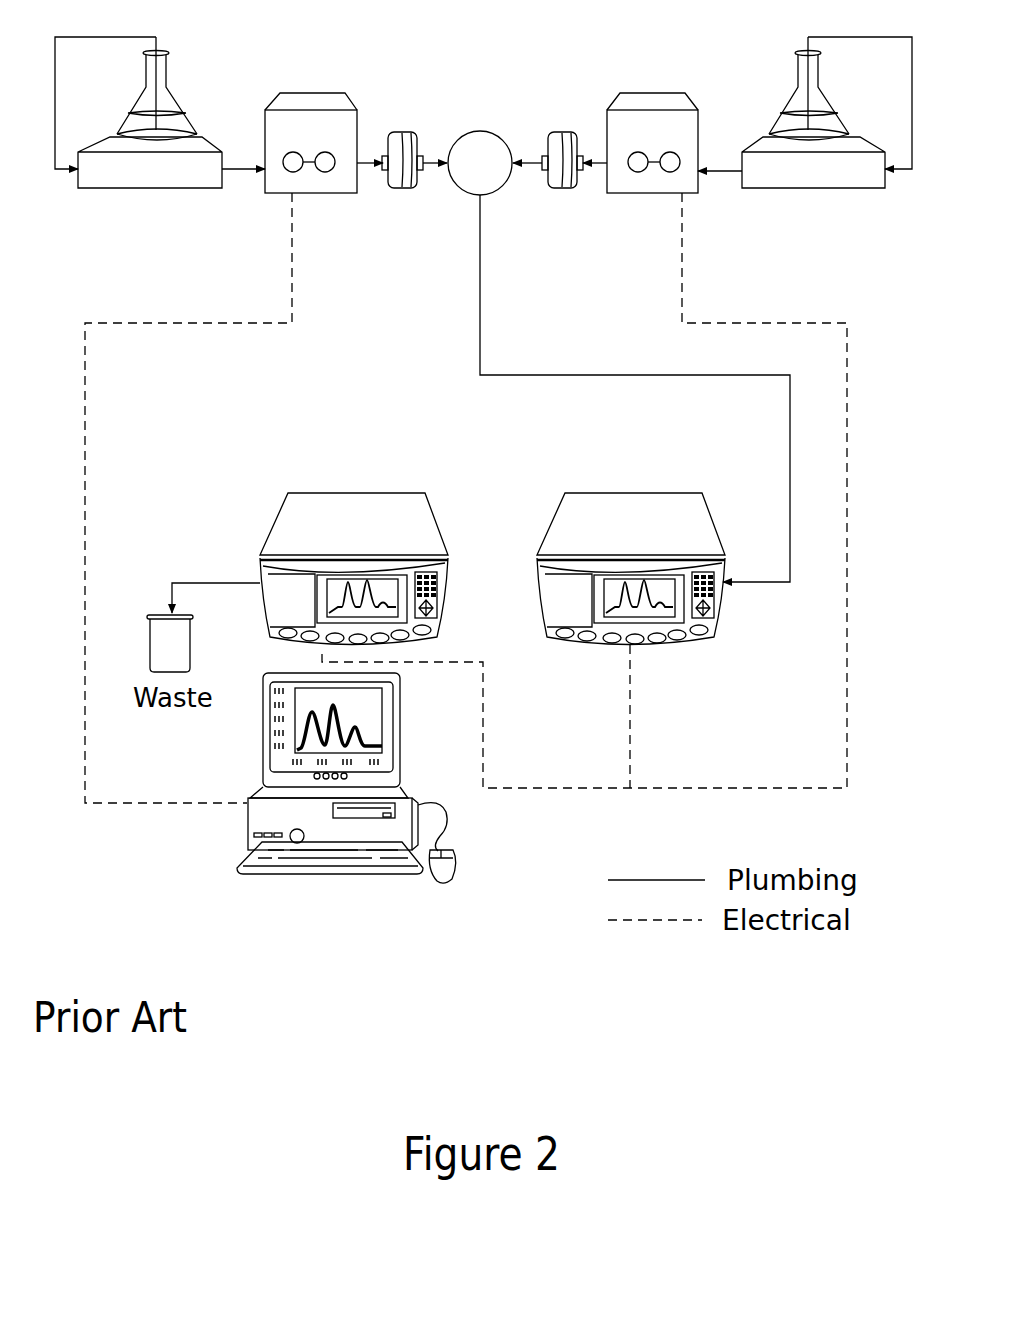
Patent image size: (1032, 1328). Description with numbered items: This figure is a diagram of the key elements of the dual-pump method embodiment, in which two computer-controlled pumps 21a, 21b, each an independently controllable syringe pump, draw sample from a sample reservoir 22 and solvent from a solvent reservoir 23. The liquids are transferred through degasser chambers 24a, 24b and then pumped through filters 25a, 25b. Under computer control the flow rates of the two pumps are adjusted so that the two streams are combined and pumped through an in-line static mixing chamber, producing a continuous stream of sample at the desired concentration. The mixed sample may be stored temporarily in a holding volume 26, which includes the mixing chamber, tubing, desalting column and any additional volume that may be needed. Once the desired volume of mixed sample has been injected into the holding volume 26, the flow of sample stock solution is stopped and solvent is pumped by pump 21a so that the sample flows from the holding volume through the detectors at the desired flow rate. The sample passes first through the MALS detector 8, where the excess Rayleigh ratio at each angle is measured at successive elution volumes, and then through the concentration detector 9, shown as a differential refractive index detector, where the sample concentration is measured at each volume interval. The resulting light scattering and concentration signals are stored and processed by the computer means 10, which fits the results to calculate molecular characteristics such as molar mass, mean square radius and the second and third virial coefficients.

The MALS detector 8 is at (723, 637).
The concentration detector 9 is at (257, 530).
The computer means 10 is at (247, 830).
The computer-controlled pump 21a is at (313, 87).
The computer-controlled pump 21b is at (643, 83).
The sample reservoir 22 is at (772, 120).
The solvent reservoir 23 is at (192, 118).
The degasser chamber 24a is at (147, 195).
The degasser chamber 24b is at (827, 198).
The filter 25a is at (385, 193).
The filter 25b is at (578, 193).
The holding volume 26 is at (493, 193).